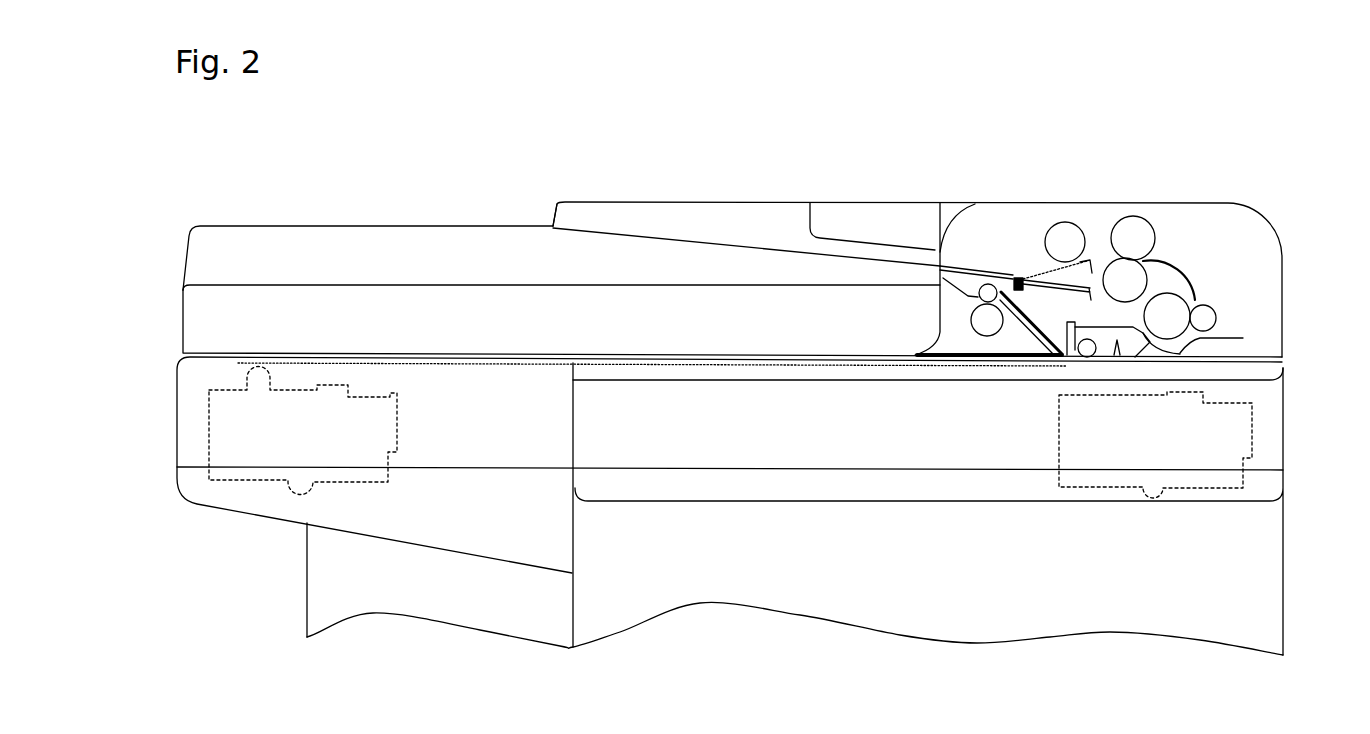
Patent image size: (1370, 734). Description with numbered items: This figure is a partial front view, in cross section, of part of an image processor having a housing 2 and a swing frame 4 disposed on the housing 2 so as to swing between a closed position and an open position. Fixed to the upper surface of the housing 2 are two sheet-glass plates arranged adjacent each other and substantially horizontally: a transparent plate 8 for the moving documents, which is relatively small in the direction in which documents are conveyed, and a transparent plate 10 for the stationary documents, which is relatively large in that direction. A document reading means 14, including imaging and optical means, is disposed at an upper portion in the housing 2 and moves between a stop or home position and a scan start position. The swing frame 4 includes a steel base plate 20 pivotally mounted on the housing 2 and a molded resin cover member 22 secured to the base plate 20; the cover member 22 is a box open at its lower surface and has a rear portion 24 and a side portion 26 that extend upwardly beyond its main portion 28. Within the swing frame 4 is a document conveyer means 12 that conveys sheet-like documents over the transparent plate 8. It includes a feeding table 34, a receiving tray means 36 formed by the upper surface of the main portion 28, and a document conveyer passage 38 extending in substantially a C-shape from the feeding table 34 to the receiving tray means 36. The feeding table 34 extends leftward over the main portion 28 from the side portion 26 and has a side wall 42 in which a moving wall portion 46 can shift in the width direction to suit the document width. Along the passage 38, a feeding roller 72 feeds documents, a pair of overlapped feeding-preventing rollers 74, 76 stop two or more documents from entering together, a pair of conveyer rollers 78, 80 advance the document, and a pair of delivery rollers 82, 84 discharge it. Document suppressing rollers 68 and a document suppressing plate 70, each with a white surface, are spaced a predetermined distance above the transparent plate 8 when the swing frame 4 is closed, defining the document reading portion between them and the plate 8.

The housing 2 is at (769, 506).
The swing frame 4 is at (714, 274).
The transparent plate for the moving documents 8 is at (1088, 366).
The transparent plate for the stationary documents 10 is at (855, 367).
The document conveyer means 12 is at (1207, 247).
The document reading means 14 is at (249, 483).
The base plate 20 is at (927, 350).
The cover member 22 is at (183, 314).
The rear portion 24 is at (324, 226).
The side portion 26 is at (1056, 222).
The main portion 28 is at (440, 284).
The feeding table 34 is at (789, 201).
The receiving tray means 36 is at (737, 284).
The document conveyer passage 38 is at (1191, 260).
The side wall 42 is at (643, 204).
The moving wall portion 46 is at (853, 217).
The document suppressing roller 68 is at (1111, 358).
The document suppressing plate 70 is at (1120, 360).
The feeding roller 72 is at (1052, 228).
The overlapped feeding-preventing roller 74 is at (1122, 218).
The overlapped feeding-preventing roller 76 is at (1168, 257).
The conveyer roller 78 is at (1187, 295).
The conveyer roller 80 is at (1217, 318).
The delivery roller 82 is at (987, 336).
The delivery roller 84 is at (993, 272).